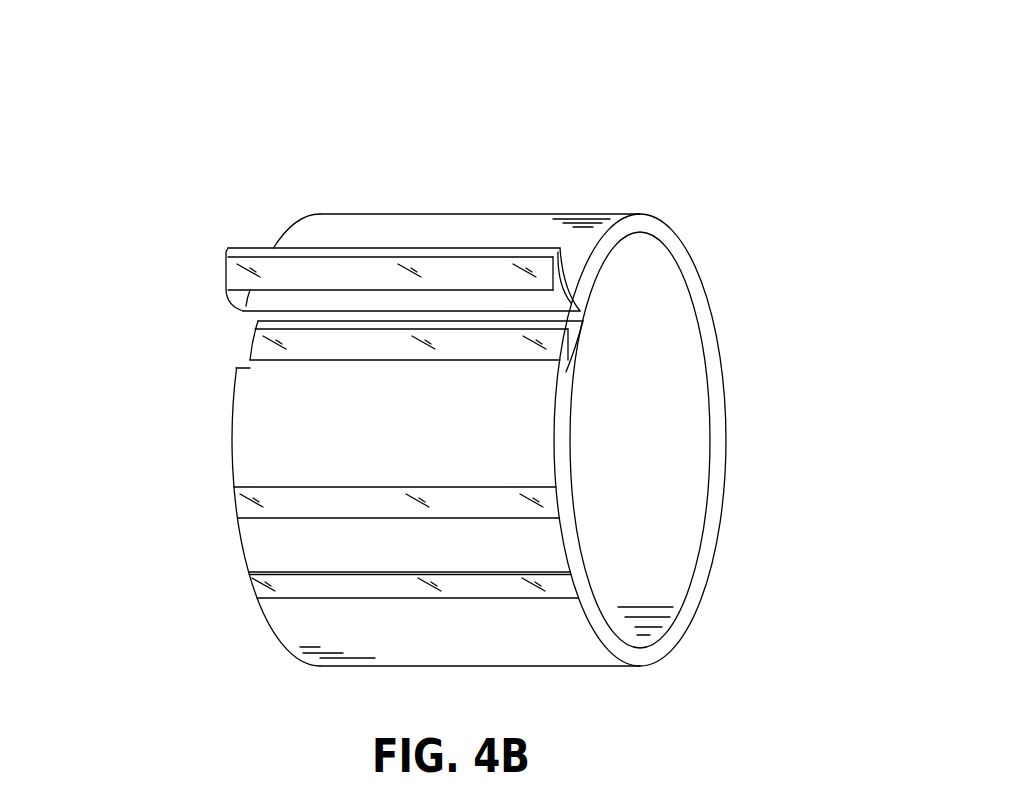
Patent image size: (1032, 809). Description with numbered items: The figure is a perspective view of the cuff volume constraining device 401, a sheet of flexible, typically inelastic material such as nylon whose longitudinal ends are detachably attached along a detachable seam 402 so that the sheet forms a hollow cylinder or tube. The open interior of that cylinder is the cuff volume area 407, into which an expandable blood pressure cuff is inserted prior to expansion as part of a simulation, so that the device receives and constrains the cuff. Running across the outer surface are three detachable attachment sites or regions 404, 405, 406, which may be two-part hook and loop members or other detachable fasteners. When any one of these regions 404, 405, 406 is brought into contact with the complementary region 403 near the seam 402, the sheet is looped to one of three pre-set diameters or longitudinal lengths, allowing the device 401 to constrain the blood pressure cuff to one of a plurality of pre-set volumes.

The cuff volume constraining device 401 is at (365, 124).
The detachable seam 402 is at (203, 299).
The complementary region 403 is at (270, 273).
The detachable attachment site 404 is at (248, 360).
The detachable attachment region 405 is at (237, 493).
The detachable attachment region 406 is at (247, 580).
The cuff volume area 407 is at (660, 391).